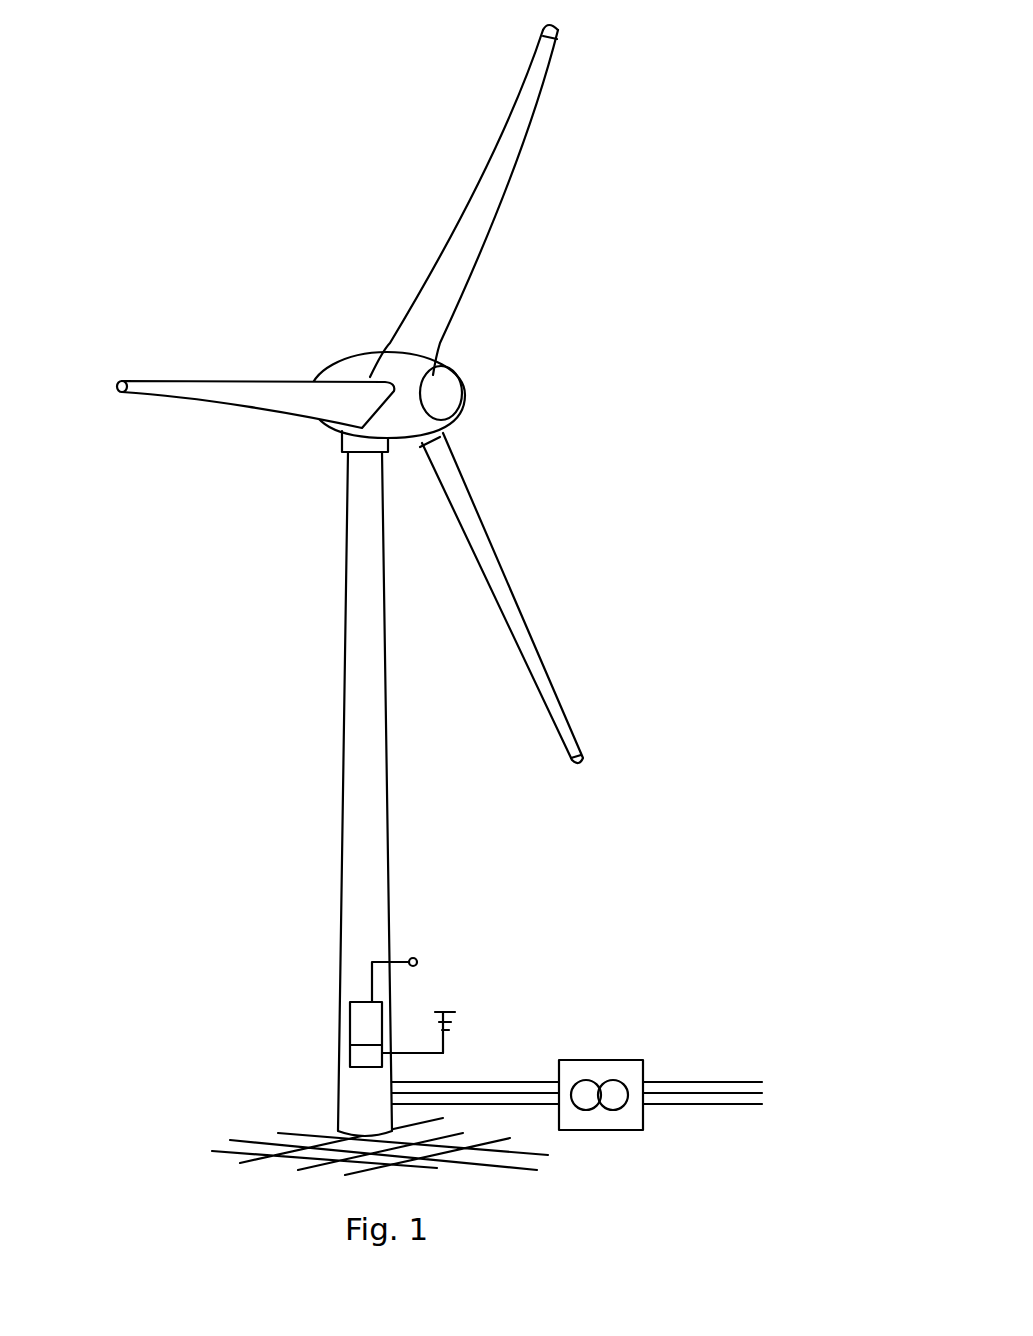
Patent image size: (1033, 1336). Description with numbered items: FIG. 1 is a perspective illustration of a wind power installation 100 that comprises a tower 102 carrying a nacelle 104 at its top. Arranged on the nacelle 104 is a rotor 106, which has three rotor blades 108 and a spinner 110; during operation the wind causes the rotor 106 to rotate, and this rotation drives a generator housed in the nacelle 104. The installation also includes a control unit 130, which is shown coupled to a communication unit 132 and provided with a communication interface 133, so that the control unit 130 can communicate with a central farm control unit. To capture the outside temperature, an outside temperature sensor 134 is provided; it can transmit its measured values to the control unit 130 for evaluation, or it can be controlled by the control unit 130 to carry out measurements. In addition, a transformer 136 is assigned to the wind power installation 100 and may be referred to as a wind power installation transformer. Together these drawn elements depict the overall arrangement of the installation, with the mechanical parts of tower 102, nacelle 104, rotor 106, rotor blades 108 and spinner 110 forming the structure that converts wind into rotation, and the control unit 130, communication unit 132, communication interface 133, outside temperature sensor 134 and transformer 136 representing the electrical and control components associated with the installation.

The wind power installation 100 is at (436, 600).
The tower 102 is at (372, 817).
The nacelle 104 is at (358, 365).
The rotor 106 is at (398, 394).
The rotor blade 108 is at (505, 148).
The spinner 110 is at (446, 395).
The control unit 130 is at (332, 1019).
The communication unit 132 is at (363, 1055).
The communication interface 133 is at (458, 1020).
The outside temperature sensor 134 is at (418, 957).
The transformer 136 is at (610, 1060).